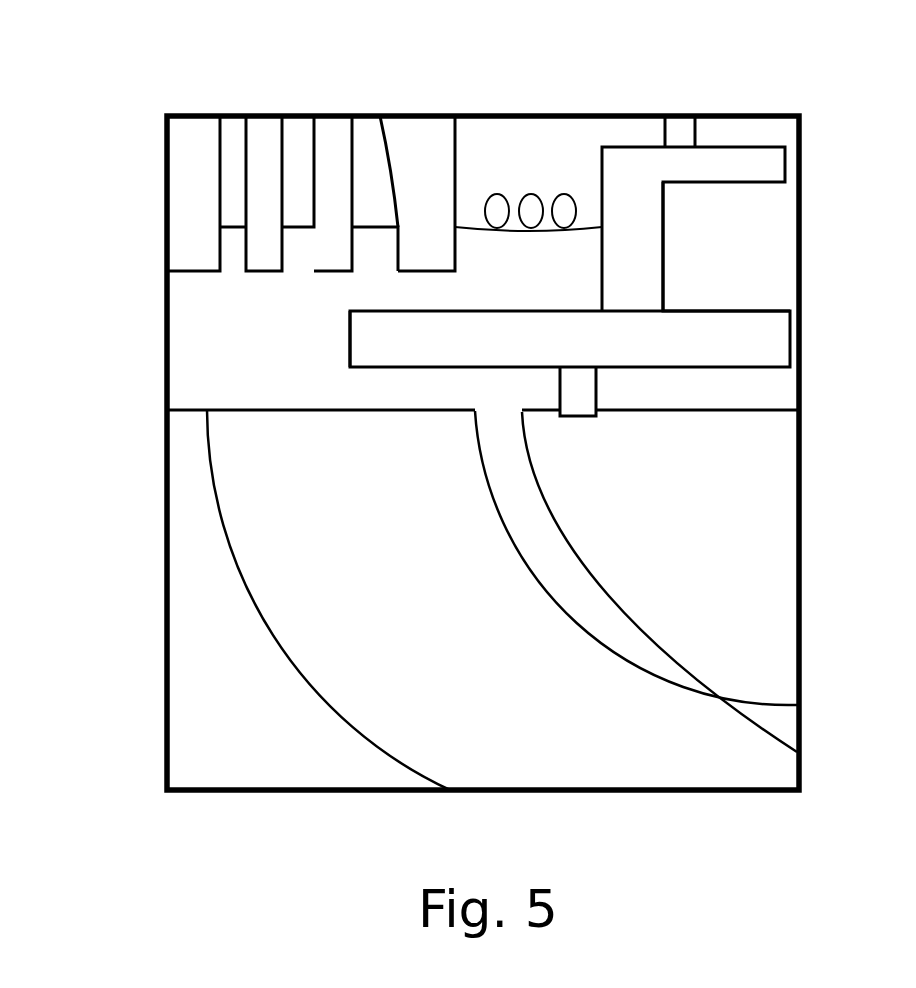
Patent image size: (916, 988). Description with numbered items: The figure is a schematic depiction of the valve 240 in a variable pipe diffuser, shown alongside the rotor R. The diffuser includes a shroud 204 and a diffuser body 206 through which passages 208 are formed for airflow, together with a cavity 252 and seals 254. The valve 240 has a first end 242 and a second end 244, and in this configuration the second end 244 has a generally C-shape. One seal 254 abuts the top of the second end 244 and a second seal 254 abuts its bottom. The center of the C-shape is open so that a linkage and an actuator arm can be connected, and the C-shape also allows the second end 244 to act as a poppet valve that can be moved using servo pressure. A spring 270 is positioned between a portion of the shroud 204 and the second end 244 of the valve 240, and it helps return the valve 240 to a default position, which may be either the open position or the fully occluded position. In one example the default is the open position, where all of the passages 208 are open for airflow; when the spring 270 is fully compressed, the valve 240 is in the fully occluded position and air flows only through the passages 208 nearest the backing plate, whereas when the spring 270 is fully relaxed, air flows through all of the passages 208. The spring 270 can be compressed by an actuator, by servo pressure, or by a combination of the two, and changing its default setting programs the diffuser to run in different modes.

The shroud 204 is at (440, 140).
The diffuser body 206 is at (190, 143).
The passages 208 is at (227, 133).
The valve 240 is at (642, 328).
The first end 242 is at (348, 340).
The second end 244 is at (788, 162).
The cavity 252 is at (747, 238).
The seals 254 is at (680, 132).
The spring 270 is at (532, 192).
The rotor R is at (222, 530).